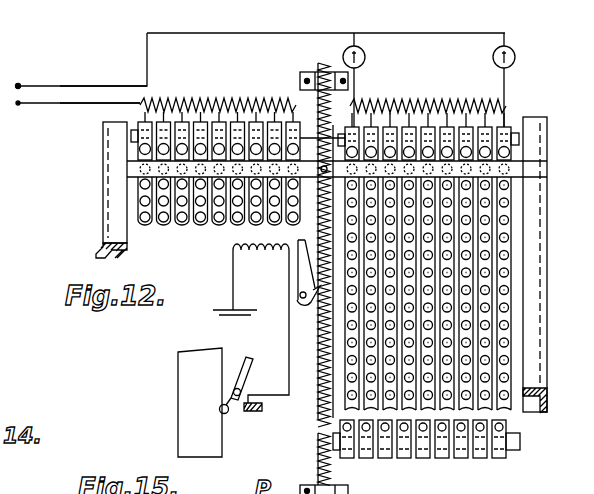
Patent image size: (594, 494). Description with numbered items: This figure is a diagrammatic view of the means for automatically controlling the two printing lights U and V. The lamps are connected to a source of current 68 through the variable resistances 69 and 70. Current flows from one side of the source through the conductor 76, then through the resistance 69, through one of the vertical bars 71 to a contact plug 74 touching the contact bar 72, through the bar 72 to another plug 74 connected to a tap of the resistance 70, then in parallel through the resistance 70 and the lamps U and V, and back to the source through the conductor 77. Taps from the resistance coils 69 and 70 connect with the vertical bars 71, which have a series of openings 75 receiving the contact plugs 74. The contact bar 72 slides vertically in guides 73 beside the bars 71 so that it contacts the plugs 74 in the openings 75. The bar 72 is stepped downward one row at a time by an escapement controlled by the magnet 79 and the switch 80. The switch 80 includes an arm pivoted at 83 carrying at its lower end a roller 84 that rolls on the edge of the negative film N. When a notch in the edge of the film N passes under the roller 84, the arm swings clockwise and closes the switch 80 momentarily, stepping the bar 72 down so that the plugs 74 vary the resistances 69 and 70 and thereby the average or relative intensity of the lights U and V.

The source of current 68 is at (27, 86).
The conductor 77 is at (90, 85).
The conductor 76 is at (70, 106).
The variable resistance 69 is at (241, 100).
The variable resistance 70 is at (441, 103).
The printing light u is at (366, 57).
The printing light v is at (516, 57).
The contact plug 74 is at (175, 224).
The vertical bar 71 is at (486, 253).
The opening 75 is at (510, 128).
The contact bar 72 is at (490, 172).
The guide 73 is at (103, 250).
The magnet 79 is at (257, 252).
The negative film n is at (192, 372).
The switch 80 is at (252, 360).
The pivot 83 is at (238, 396).
The roller 84 is at (227, 414).